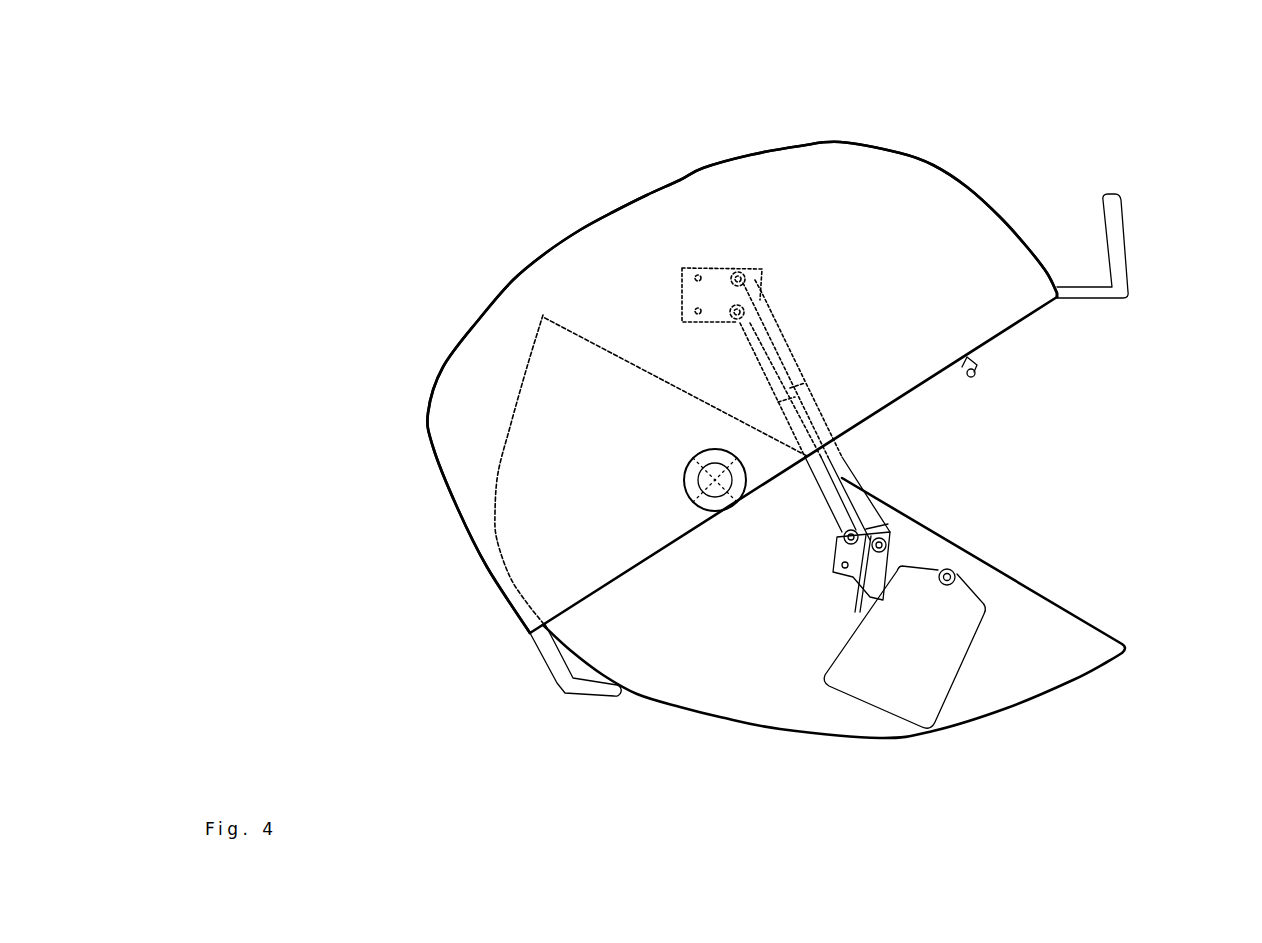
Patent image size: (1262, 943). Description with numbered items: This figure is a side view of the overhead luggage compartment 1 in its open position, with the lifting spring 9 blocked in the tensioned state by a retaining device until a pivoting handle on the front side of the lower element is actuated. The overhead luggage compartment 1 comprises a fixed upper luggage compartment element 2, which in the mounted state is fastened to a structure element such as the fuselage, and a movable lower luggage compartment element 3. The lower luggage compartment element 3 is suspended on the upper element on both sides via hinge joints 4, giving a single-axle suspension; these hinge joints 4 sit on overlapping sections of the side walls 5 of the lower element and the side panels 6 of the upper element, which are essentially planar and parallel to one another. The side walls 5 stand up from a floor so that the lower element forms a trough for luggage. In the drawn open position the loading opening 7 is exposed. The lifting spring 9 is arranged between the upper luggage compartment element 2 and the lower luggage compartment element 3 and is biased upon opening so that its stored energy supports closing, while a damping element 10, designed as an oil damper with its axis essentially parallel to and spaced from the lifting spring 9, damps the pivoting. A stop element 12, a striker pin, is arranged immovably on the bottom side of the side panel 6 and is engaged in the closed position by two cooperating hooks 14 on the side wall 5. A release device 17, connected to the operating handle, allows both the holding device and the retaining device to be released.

The overhead luggage compartment 1 is at (741, 113).
The upper luggage compartment element 2 is at (905, 198).
The lower luggage compartment element 3 is at (1059, 723).
The hinge joint 4 is at (715, 481).
The side wall 5 is at (1068, 635).
The side panel 6 is at (829, 183).
The loading opening 7 is at (1132, 375).
The lifting spring 9 is at (847, 487).
The damping element 10 is at (840, 508).
The stop element 12 is at (977, 377).
The hook 14 is at (946, 571).
The release device 17 is at (878, 567).